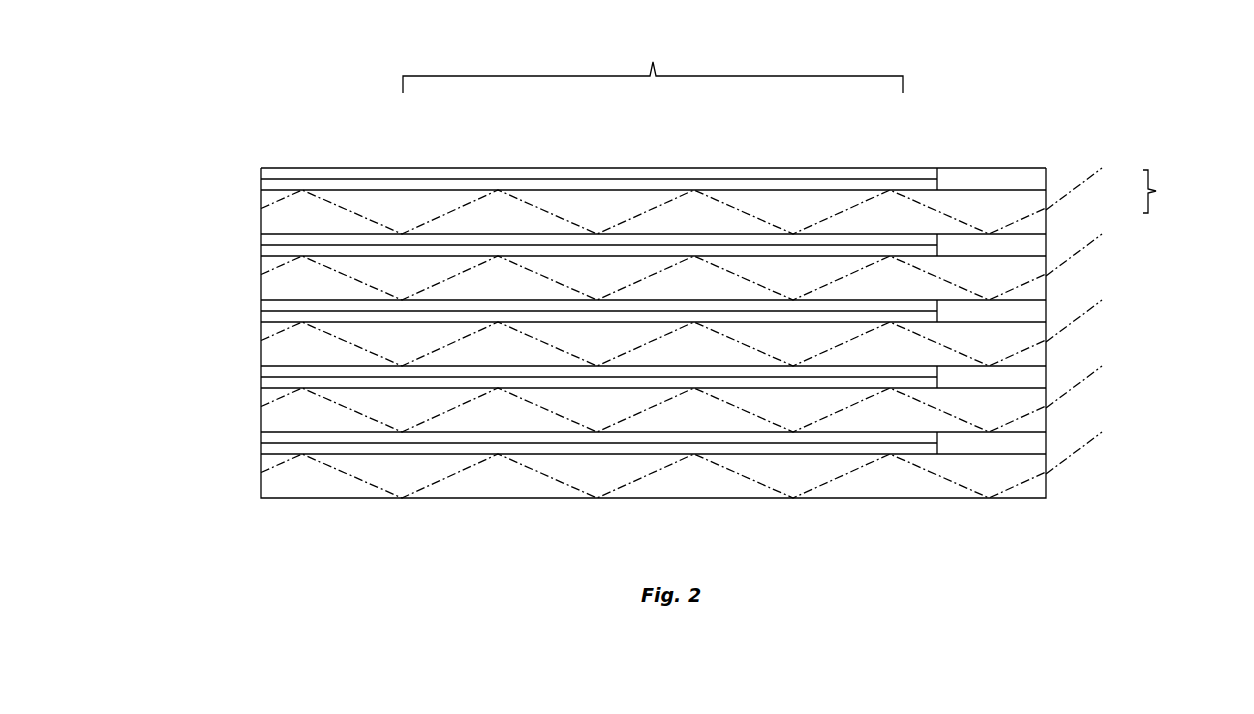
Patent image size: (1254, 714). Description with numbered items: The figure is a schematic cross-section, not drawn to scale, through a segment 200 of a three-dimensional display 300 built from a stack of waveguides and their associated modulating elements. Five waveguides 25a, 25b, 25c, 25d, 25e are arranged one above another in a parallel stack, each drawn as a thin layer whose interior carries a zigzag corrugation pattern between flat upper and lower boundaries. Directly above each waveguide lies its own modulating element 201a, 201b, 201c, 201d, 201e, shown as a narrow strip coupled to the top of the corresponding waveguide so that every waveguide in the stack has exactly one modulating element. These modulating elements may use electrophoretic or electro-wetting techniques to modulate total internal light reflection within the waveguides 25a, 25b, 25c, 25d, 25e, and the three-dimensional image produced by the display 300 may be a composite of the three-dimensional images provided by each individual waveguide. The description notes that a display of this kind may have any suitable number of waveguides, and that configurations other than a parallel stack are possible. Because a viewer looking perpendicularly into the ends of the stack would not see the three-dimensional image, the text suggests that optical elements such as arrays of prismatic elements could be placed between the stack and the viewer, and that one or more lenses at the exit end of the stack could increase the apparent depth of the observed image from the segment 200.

The segment 200 is at (1181, 191).
The three-dimensional display 300 is at (653, 61).
The modulating element 201a is at (261, 184).
The modulating element 201b is at (261, 245).
The modulating element 201c is at (261, 312).
The modulating element 201d is at (261, 377).
The modulating element 201e is at (261, 443).
The waveguide 25a is at (261, 213).
The waveguide 25b is at (261, 280).
The waveguide 25c is at (261, 345).
The waveguide 25d is at (261, 410).
The waveguide 25e is at (261, 478).